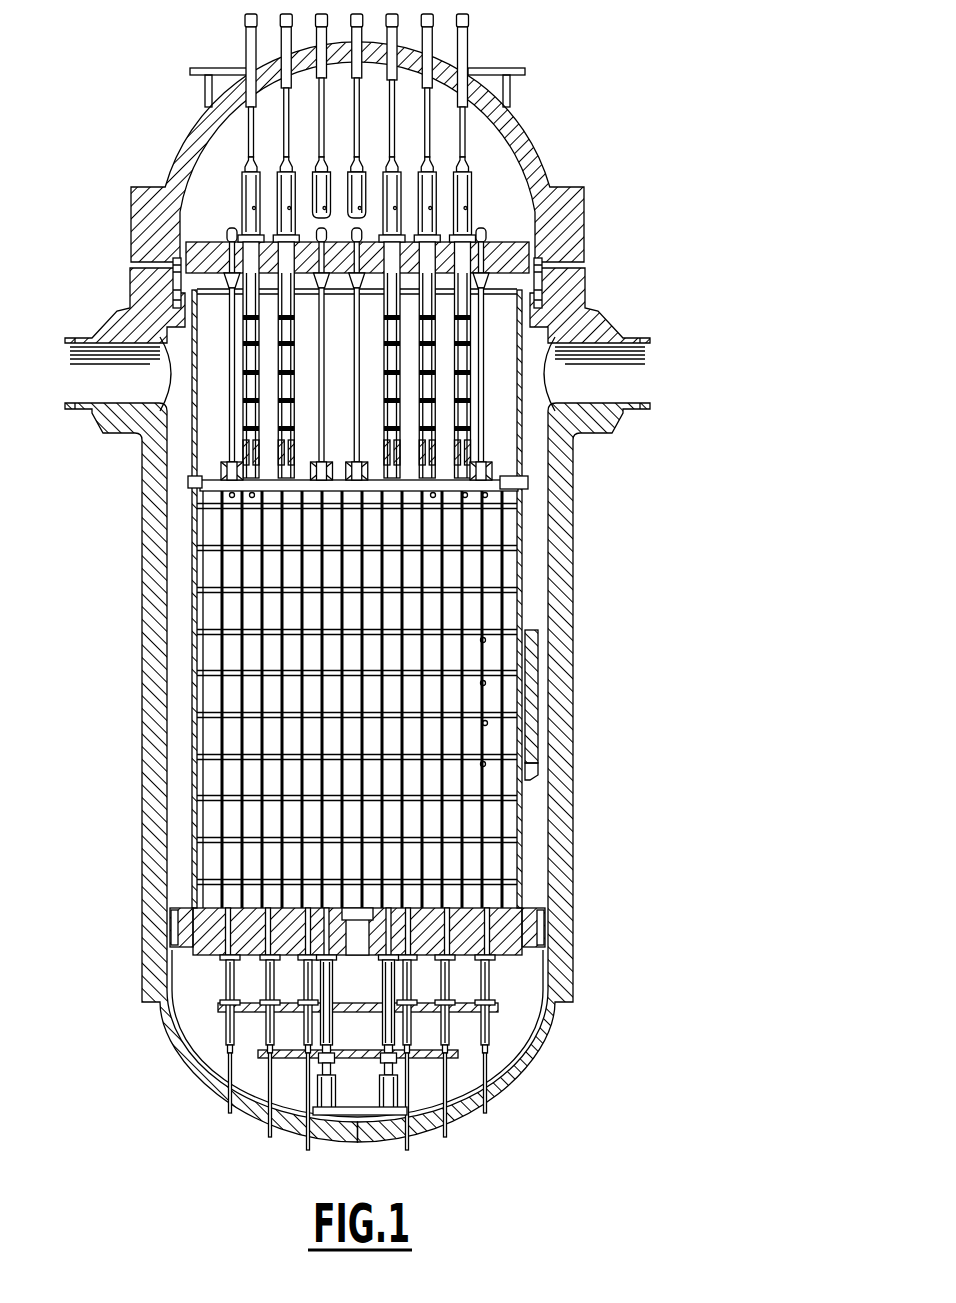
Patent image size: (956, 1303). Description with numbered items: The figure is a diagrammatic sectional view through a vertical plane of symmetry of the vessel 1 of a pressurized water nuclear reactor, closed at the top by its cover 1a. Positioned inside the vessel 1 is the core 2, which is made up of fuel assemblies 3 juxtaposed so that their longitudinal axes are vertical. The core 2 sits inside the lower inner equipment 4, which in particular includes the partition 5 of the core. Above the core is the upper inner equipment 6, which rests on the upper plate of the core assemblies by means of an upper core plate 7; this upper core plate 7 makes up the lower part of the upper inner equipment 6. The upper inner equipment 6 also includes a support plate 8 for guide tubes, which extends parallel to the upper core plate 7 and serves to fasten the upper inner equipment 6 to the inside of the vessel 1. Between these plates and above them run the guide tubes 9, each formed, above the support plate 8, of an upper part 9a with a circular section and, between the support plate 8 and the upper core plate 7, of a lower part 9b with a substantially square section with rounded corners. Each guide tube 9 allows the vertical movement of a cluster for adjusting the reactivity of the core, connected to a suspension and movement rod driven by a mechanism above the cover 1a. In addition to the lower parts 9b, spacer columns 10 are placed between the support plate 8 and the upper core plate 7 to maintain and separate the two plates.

The vessel 1 is at (565, 665).
The cover 1a is at (522, 130).
The core 2 is at (349, 699).
The fuel assemblies 3 is at (240, 738).
The lower inner equipment 4 is at (536, 605).
The partition 5 is at (230, 822).
The upper inner equipment 6 is at (493, 318).
The upper core plate 7 is at (190, 481).
The support plate 8 is at (518, 240).
The guide tubes 9 is at (245, 380).
The upper part 9a is at (248, 192).
The lower part 9b is at (252, 417).
The spacer columns 10 is at (170, 328).